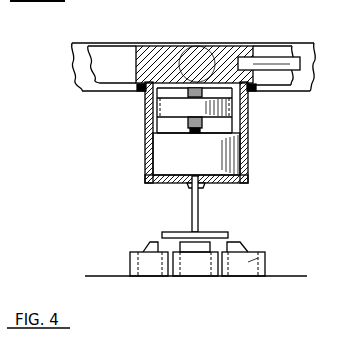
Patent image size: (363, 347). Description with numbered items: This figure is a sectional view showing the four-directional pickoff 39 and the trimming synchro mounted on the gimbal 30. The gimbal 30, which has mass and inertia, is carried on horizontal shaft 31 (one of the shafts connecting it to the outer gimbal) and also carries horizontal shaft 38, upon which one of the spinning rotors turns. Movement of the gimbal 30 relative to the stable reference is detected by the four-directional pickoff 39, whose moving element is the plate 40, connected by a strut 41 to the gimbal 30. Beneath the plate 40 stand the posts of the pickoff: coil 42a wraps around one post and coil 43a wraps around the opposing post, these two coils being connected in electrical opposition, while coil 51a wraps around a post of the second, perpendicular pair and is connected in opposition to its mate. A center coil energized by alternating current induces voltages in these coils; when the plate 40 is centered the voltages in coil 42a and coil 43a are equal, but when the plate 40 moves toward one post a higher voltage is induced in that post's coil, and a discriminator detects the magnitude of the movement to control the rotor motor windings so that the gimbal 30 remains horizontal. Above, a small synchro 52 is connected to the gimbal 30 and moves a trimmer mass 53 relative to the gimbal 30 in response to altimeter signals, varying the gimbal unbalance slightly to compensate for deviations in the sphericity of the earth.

The gimbal 30 is at (120, 58).
The horizontal shaft 31 is at (189, 45).
The horizontal shaft 38 is at (276, 61).
The trimmer mass 53 is at (172, 105).
The synchro 52 is at (165, 152).
The strut 41 is at (192, 208).
The plate 40 is at (210, 232).
The coil 42a is at (140, 258).
The coil 43a is at (241, 258).
The four-directional pickoff 39 is at (245, 264).
The coil 51a is at (187, 265).